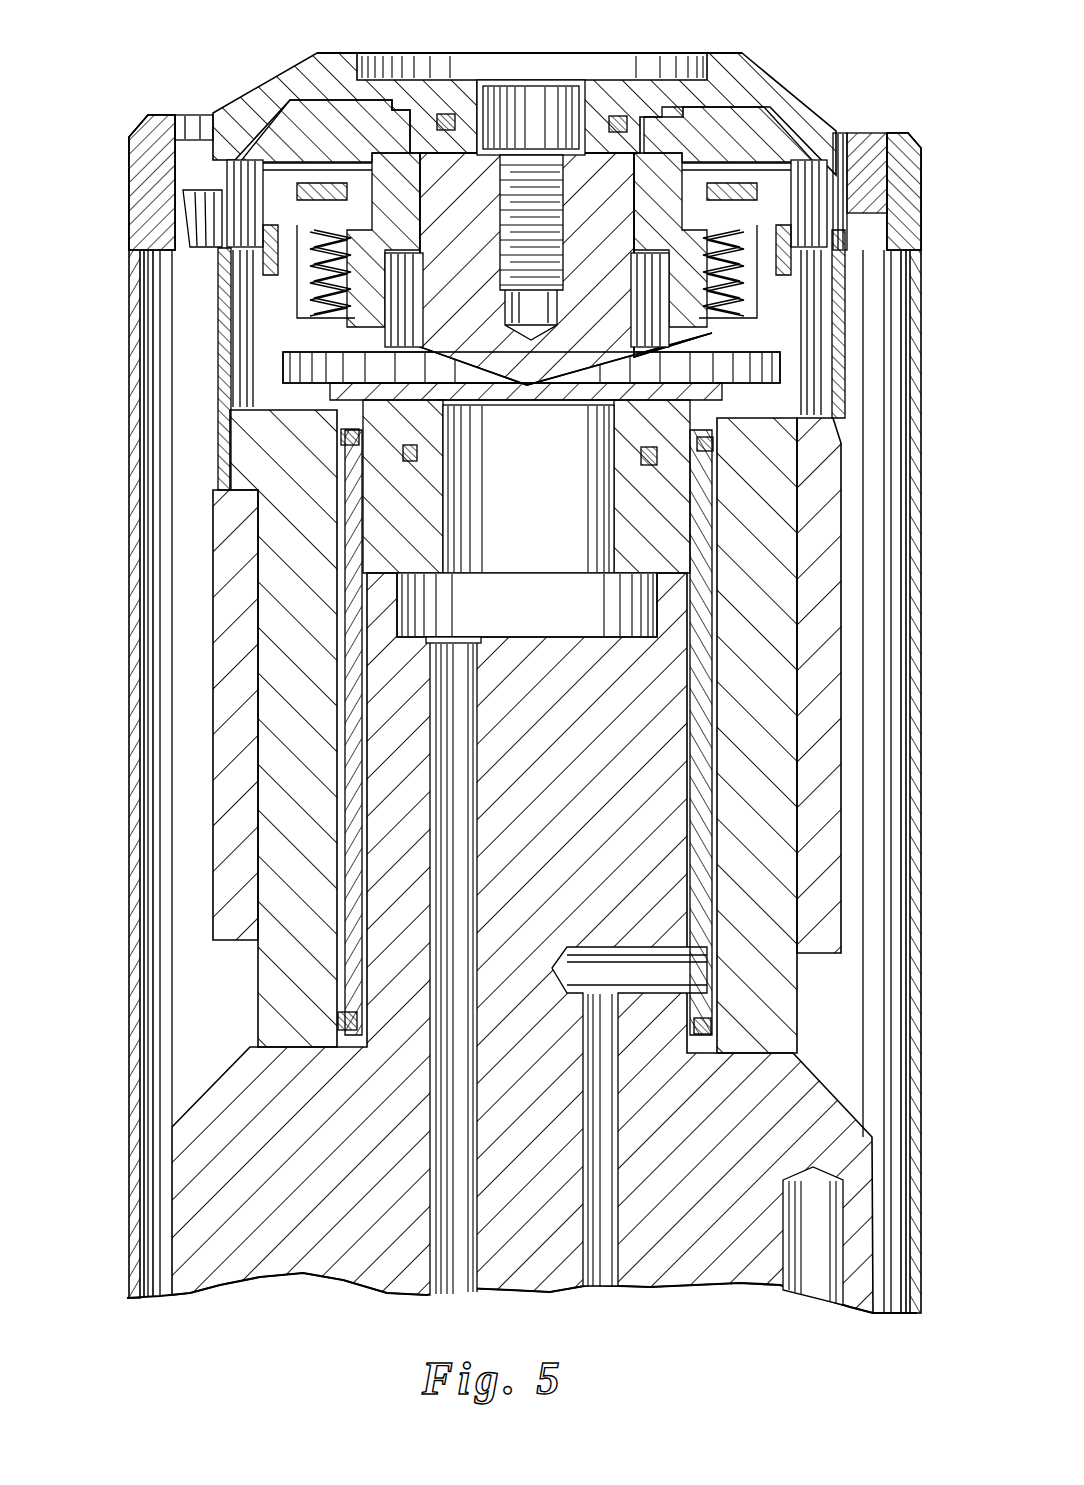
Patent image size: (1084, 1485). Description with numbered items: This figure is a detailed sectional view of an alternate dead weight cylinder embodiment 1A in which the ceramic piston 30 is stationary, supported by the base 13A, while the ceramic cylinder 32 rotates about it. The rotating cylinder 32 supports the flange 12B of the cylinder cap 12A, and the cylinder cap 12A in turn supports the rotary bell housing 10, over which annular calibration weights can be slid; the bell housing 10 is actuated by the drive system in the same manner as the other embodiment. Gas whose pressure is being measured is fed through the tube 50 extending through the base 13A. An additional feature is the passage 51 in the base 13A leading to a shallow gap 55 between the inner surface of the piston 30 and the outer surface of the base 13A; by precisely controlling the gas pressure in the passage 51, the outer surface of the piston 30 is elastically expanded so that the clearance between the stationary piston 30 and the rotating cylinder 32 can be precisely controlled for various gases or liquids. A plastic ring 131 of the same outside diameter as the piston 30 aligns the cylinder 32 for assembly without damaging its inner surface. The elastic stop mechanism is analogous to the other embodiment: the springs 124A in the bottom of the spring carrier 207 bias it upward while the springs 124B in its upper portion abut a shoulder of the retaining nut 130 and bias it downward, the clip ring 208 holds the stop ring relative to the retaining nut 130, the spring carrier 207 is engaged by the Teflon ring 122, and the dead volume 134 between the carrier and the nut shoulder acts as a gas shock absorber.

The bell housing 10 is at (130, 790).
The cylinder cap 12A is at (330, 62).
The flange 12B is at (224, 470).
The base 13A is at (617, 803).
The piston 30 is at (310, 715).
The cylinder 32 is at (230, 790).
The tube 50 is at (425, 1122).
The passage 51 is at (608, 1095).
The shallow gap 55 is at (333, 780).
The Teflon ring 122 is at (400, 160).
The springs of the first set 124A is at (300, 295).
The springs of the second set 124B is at (772, 290).
The retaining nut 130 is at (250, 393).
The plastic ring 131 is at (283, 248).
The dead volume 134 is at (277, 338).
The spring carrier 207 is at (347, 187).
The clip ring 208 is at (292, 190).
The dead weight cylinder embodiment 1A is at (150, 1330).